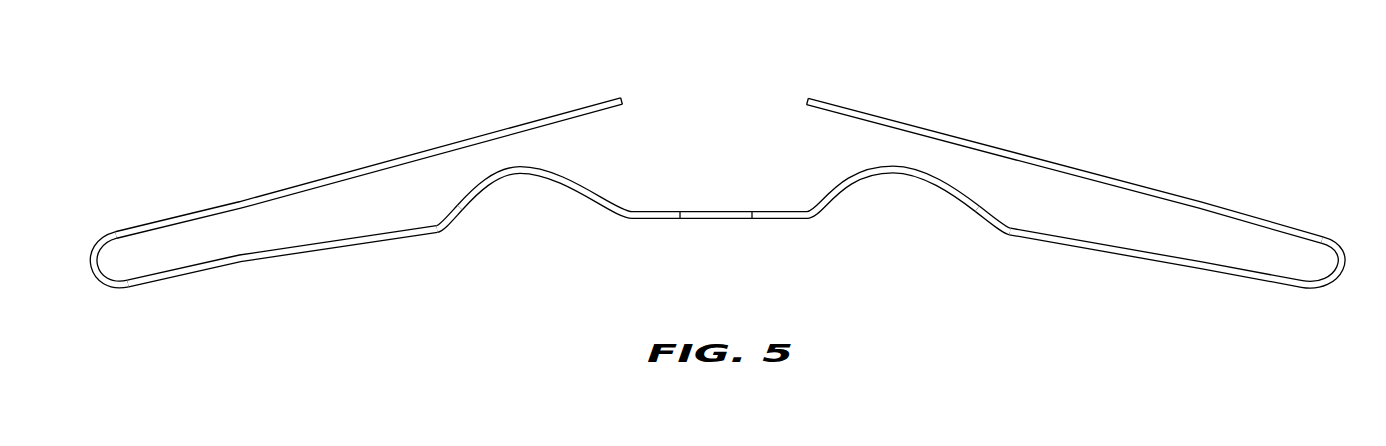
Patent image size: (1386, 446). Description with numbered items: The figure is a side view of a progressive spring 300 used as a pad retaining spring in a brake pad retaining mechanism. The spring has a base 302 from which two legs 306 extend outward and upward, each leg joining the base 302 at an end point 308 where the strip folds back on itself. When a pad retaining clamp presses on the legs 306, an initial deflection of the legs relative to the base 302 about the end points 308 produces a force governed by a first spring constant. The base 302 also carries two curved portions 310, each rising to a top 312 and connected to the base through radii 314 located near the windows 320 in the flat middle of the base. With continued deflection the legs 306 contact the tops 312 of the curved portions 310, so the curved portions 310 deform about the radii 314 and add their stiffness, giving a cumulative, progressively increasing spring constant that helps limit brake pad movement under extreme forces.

The progressive spring 300 is at (707, 192).
The base 302 is at (308, 252).
The leg 306 is at (345, 172).
The end point 308 is at (1343, 263).
The curved portion 310 is at (530, 174).
The top of curved portion 312 is at (545, 168).
The radius 314 is at (447, 229).
The window 320 is at (727, 218).